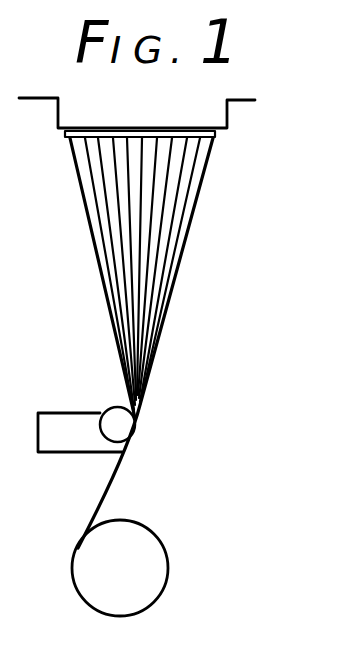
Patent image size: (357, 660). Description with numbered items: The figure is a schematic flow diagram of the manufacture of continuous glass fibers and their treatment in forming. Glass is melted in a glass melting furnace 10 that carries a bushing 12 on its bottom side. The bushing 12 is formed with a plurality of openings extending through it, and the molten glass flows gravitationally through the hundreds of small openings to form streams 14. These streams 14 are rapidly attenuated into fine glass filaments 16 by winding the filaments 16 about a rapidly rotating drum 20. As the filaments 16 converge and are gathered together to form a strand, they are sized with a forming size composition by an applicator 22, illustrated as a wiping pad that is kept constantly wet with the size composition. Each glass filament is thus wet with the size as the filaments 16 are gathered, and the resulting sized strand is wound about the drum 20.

The glass melting furnace 10 is at (236, 94).
The bushing 12 is at (232, 120).
The streams 14 is at (166, 343).
The glass filaments 16 is at (135, 275).
The drum 20 is at (153, 537).
The applicator 22 is at (118, 418).